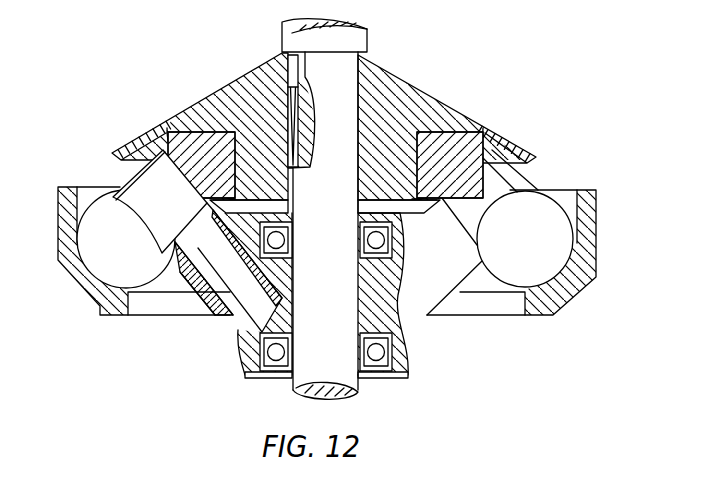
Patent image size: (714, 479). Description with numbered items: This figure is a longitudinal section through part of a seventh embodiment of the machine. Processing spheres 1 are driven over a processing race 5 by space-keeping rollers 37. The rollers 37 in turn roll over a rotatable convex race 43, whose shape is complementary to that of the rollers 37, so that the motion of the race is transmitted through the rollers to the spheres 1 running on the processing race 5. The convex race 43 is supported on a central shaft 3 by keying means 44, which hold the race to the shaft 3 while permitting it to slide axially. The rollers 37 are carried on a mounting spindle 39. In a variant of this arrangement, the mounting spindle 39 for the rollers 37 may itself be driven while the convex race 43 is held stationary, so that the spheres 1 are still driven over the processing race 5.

The processing spheres 1 is at (103, 270).
The shaft 3 is at (364, 42).
The processing race 5 is at (557, 272).
The space-keeping rollers 37 is at (500, 178).
The mounting spindle 39 is at (234, 328).
The convex race 43 is at (181, 168).
The keying means 44 is at (290, 92).